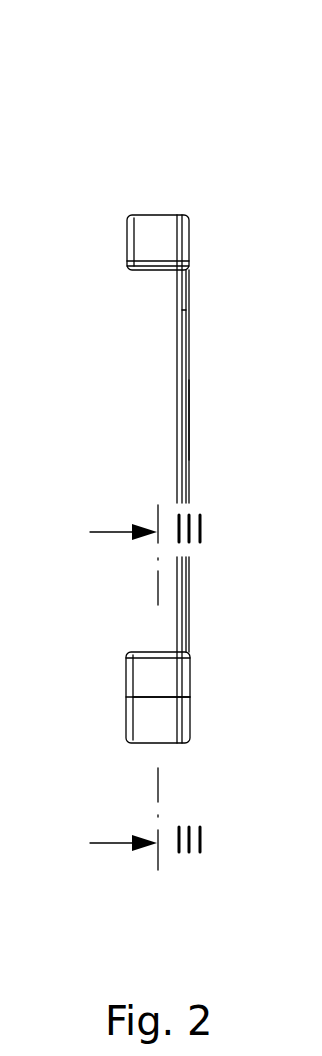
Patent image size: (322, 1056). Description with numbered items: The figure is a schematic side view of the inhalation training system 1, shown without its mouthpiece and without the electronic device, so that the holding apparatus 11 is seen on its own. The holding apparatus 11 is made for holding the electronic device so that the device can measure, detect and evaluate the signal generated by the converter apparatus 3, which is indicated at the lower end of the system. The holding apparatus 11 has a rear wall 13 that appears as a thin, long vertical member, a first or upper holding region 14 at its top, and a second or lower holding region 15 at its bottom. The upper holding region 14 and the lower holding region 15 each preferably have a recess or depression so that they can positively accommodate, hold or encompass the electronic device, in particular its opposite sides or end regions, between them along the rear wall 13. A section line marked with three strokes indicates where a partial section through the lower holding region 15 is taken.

The inhalation training system 1 is at (213, 120).
The converter apparatus 3 is at (165, 721).
The holding apparatus 11 is at (198, 365).
The rear wall 13 is at (190, 437).
The first or upper holding region 14 is at (148, 271).
The second or lower holding region 15 is at (148, 652).